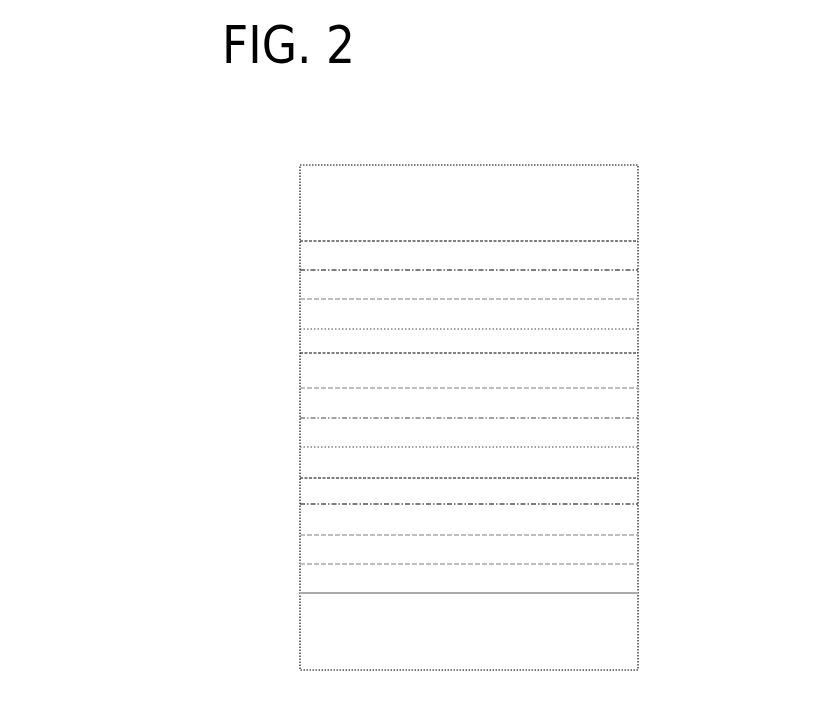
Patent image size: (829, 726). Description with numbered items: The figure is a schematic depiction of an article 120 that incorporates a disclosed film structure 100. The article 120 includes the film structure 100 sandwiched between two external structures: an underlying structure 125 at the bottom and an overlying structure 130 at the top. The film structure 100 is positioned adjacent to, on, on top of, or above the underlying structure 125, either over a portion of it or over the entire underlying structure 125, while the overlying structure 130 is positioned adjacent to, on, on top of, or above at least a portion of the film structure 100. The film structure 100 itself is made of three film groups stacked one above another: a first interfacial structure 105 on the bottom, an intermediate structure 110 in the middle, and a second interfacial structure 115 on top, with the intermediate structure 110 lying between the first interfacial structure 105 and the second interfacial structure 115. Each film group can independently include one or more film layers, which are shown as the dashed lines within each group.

The film structure 100 is at (638, 242).
The first interfacial structure 105 is at (300, 479).
The intermediate structure 110 is at (300, 354).
The second interfacial structure 115 is at (300, 242).
The article 120 is at (195, 212).
The underlying structure 125 is at (489, 644).
The overlying structure 130 is at (489, 216).